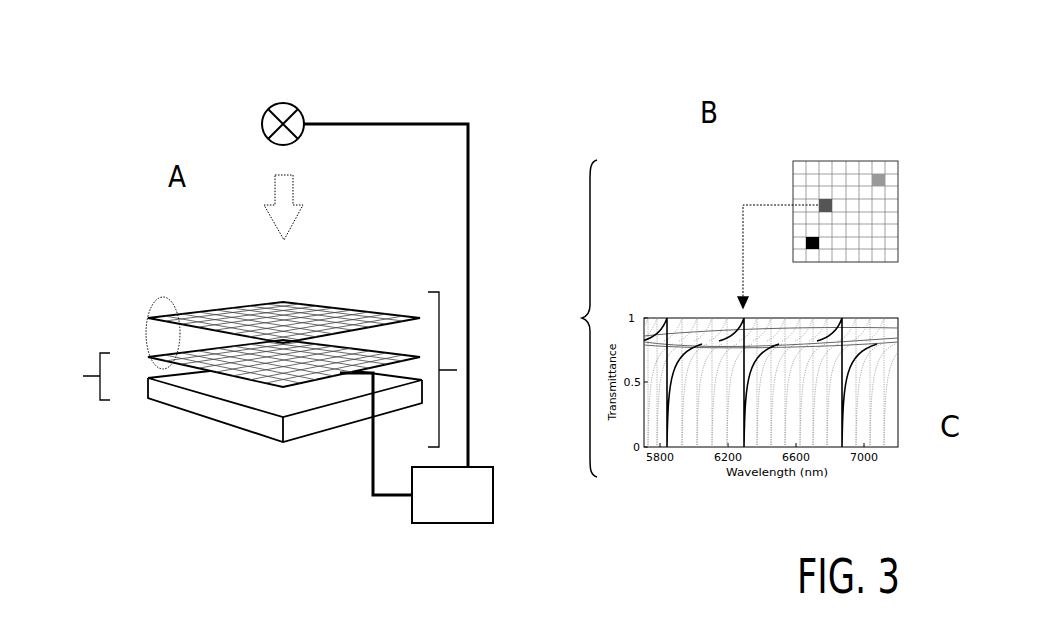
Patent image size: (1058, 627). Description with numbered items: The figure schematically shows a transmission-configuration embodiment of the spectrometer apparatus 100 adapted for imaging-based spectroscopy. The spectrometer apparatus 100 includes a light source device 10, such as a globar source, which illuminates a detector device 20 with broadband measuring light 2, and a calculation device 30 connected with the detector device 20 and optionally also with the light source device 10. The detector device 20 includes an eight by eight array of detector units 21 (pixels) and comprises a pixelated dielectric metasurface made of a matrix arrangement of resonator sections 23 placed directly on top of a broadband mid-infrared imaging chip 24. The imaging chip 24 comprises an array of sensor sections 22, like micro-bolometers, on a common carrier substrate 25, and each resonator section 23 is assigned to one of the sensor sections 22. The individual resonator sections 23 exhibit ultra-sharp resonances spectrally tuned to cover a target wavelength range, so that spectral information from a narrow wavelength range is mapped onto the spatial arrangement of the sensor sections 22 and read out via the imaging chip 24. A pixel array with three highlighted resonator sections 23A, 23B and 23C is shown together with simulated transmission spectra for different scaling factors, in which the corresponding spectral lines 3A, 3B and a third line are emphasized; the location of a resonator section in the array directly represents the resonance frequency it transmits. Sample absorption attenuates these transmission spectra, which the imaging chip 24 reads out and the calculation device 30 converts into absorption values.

The light source device 10 is at (262, 122).
The measuring light 2 is at (272, 207).
The spectrometer apparatus 100 is at (398, 229).
The detector device 20 is at (502, 388).
The detector units 21 is at (143, 335).
The sensor sections 22 is at (150, 357).
The resonator sections 23 is at (157, 313).
The imaging chip 24 is at (76, 376).
The carrier substrate 25 is at (268, 427).
The calculation device 30 is at (422, 502).
The resonator section 23A is at (873, 180).
The resonator section 23B is at (820, 203).
The resonator section 23C is at (820, 243).
The spectral line 3A is at (668, 388).
The spectral line 3B is at (745, 390).